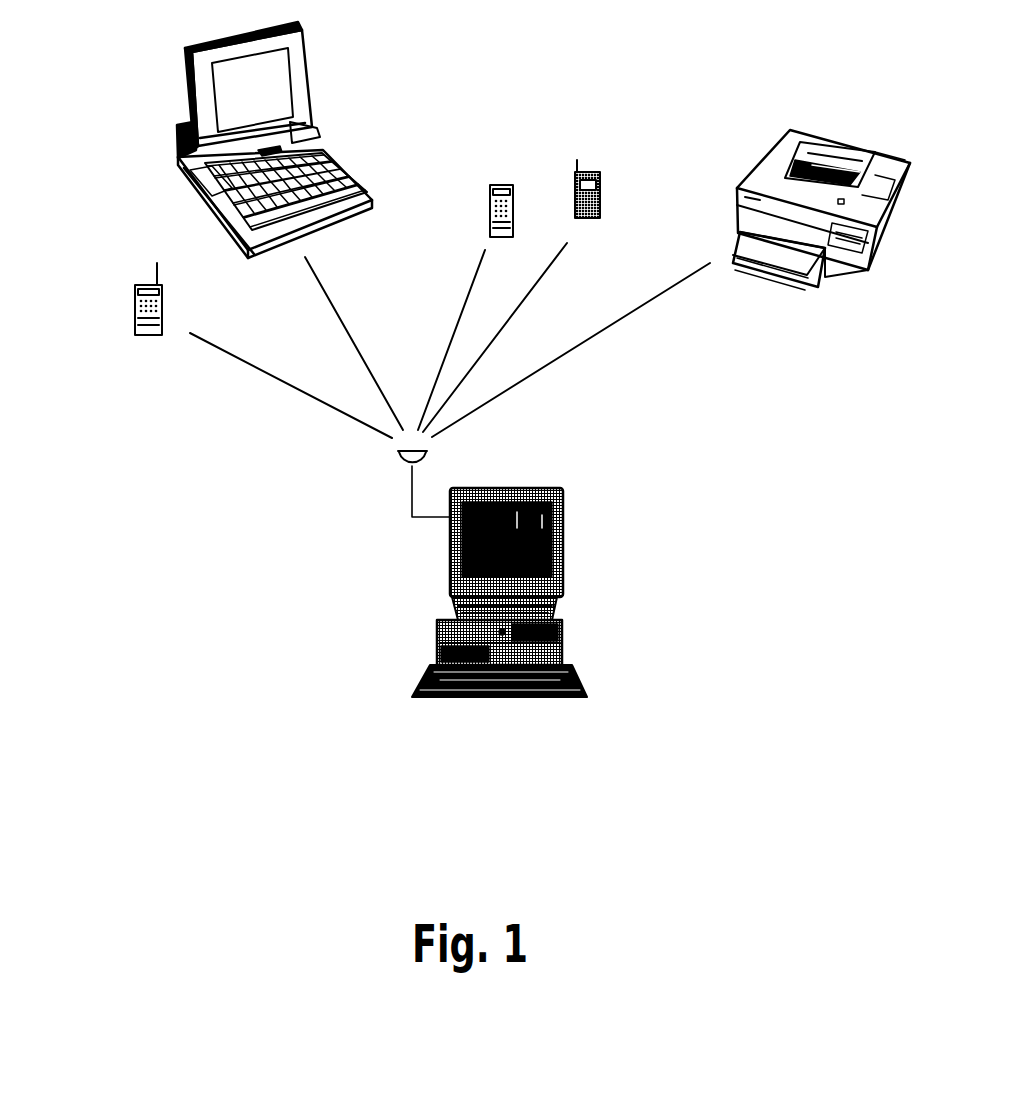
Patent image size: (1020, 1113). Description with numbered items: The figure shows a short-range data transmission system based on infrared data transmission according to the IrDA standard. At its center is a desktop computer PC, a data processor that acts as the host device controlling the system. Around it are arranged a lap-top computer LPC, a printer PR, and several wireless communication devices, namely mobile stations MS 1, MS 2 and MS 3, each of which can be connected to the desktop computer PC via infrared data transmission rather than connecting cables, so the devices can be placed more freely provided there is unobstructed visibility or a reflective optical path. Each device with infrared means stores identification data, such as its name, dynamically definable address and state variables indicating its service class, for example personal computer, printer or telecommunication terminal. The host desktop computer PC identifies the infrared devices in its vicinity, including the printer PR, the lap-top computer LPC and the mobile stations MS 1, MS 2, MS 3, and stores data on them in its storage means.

The lap-top computer LPC is at (313, 70).
The printer PR is at (808, 120).
The desktop computer PC is at (565, 497).
The first wireless communication device MS 1 is at (135, 312).
The second wireless communication device MS 2 is at (510, 183).
The third wireless communication device MS 3 is at (585, 172).